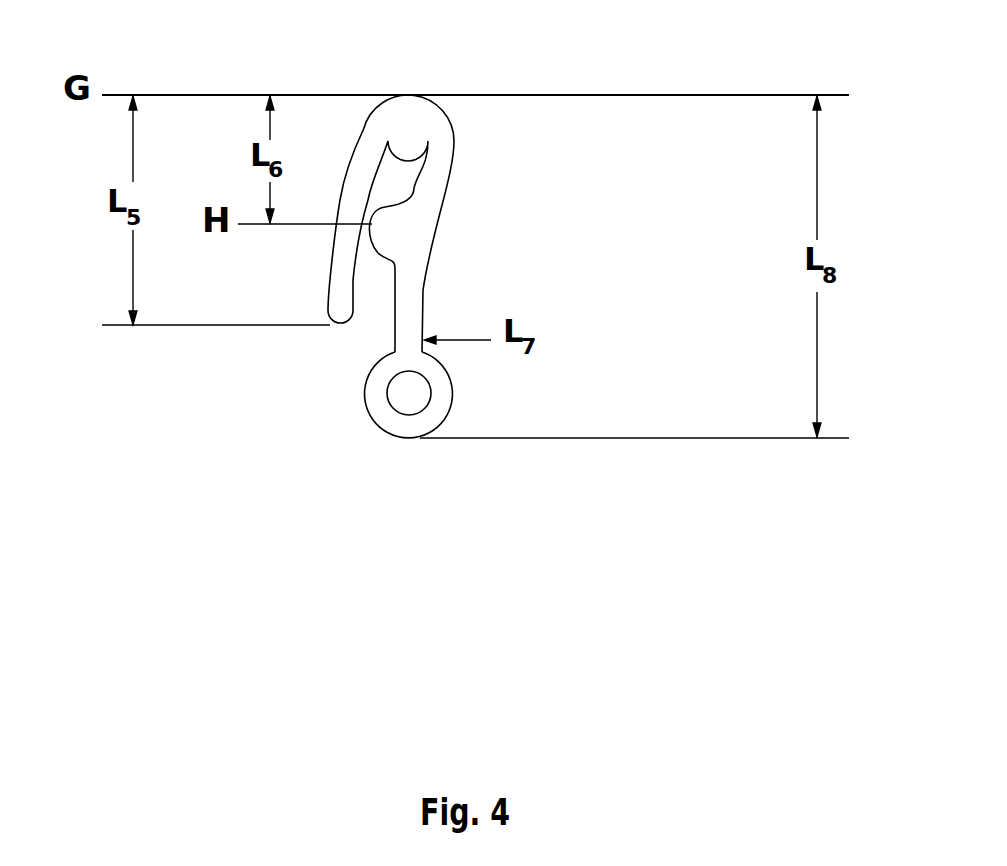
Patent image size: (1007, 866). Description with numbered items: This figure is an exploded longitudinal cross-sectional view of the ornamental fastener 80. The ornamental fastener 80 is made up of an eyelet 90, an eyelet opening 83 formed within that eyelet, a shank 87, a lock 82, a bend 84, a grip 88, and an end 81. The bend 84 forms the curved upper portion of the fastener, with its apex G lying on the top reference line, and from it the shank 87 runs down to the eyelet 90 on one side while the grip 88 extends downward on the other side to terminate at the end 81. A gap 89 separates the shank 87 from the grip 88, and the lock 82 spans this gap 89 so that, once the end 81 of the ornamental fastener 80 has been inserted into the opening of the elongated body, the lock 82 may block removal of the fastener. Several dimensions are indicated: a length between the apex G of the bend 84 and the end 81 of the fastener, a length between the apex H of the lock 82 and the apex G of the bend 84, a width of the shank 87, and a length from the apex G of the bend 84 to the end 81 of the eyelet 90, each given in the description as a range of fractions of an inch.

The ornamental fastener 80 is at (508, 149).
The end 81 is at (481, 376).
The lock 82 is at (427, 250).
The eyelet opening 83 is at (432, 409).
The bend 84 is at (415, 108).
The shank 87 is at (415, 293).
The grip 88 is at (328, 293).
The gap 89 is at (368, 332).
The eyelet 90 is at (393, 422).